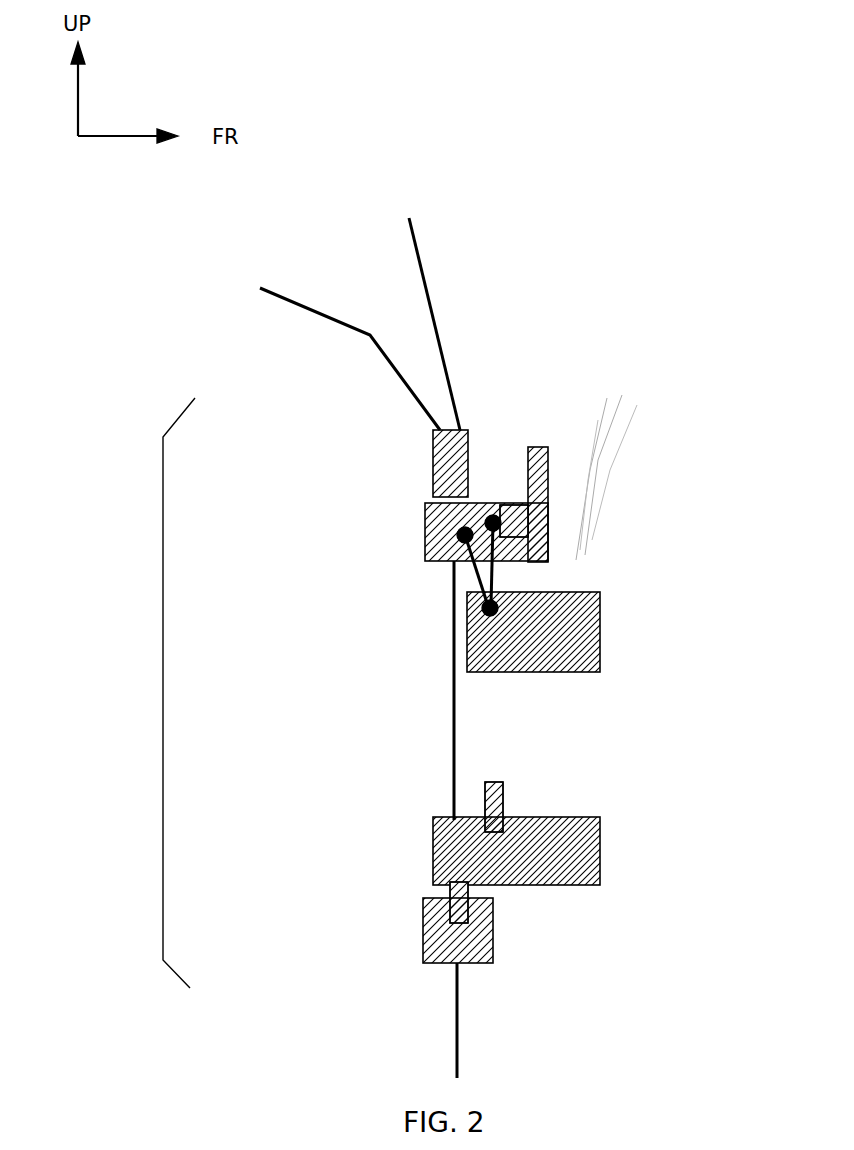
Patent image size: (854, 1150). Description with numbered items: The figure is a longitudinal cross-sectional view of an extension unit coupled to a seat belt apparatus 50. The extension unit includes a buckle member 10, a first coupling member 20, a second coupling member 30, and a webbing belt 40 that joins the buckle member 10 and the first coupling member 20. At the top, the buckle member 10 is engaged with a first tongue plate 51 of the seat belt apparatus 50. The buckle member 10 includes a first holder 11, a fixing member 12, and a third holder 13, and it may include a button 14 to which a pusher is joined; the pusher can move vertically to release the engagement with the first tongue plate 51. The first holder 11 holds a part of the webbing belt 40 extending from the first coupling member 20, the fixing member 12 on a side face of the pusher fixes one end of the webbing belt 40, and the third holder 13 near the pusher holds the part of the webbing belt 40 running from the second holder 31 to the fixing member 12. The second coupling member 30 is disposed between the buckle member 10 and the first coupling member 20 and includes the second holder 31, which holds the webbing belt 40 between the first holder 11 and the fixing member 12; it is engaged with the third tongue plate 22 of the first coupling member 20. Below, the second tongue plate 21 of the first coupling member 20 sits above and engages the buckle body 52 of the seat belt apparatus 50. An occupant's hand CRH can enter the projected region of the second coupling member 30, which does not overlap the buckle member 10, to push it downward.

The buckle member 10 is at (425, 553).
The first holder 11 is at (463, 548).
The fixing member 12 is at (497, 515).
The third holder 13 is at (495, 527).
The button 14 is at (508, 505).
The first coupling member 20 is at (600, 847).
The second tongue plate 21 is at (492, 907).
The third tongue plate 22 is at (500, 797).
The second coupling member 30 is at (600, 657).
The second holder 31 is at (467, 620).
The webbing belt 40 is at (460, 713).
The seat belt apparatus 50 is at (156, 693).
The first tongue plate 51 is at (437, 485).
The buckle body 52 is at (427, 945).
The hand CRH is at (608, 475).